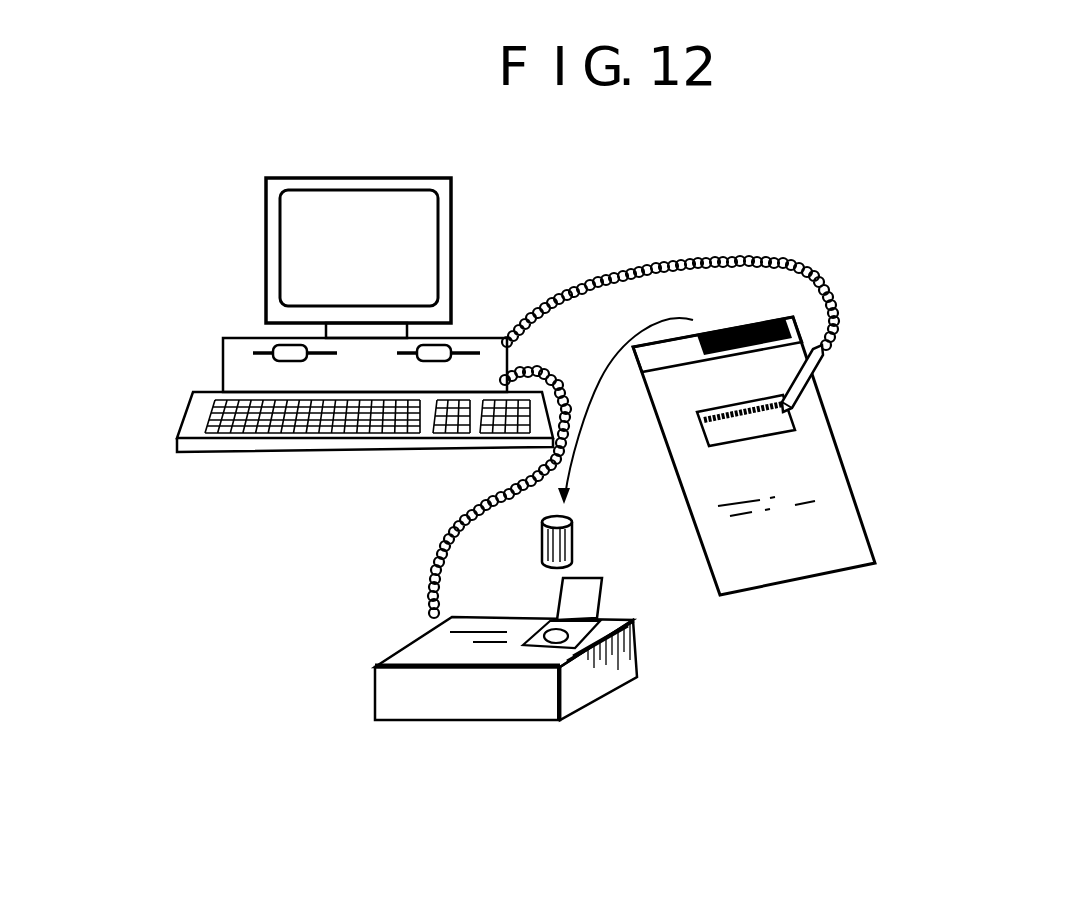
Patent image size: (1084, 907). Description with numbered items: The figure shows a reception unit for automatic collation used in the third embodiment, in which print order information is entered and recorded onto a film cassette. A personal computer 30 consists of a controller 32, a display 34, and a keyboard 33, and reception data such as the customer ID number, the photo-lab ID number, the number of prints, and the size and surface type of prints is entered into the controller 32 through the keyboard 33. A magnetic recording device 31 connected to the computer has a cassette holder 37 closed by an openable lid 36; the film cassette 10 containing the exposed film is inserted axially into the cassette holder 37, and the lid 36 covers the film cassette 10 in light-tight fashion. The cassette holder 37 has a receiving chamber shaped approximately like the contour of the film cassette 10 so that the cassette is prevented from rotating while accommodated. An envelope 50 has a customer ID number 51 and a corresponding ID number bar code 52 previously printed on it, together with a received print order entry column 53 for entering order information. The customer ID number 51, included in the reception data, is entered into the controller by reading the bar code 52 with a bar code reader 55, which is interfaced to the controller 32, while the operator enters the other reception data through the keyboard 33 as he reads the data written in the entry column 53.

The film cassette 10 is at (575, 545).
The personal computer 30 is at (233, 312).
The magnetic recording device 31 is at (481, 732).
The controller 32 is at (230, 359).
The keyboard 33 is at (300, 440).
The display 34 is at (383, 177).
The lid 36 is at (593, 597).
The cassette holder 37 is at (577, 661).
The envelope 50 is at (853, 459).
The customer ID number 51 is at (765, 440).
The ID number bar code 52 is at (697, 425).
The entry column 53 is at (750, 326).
The bar code reader 55 is at (822, 373).